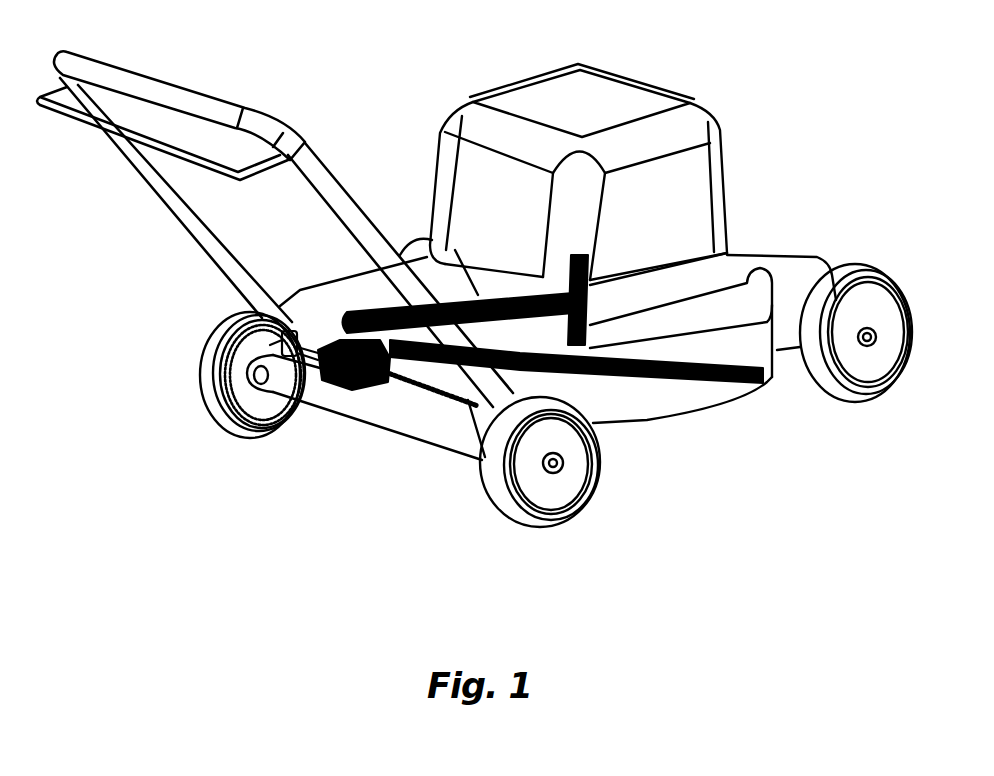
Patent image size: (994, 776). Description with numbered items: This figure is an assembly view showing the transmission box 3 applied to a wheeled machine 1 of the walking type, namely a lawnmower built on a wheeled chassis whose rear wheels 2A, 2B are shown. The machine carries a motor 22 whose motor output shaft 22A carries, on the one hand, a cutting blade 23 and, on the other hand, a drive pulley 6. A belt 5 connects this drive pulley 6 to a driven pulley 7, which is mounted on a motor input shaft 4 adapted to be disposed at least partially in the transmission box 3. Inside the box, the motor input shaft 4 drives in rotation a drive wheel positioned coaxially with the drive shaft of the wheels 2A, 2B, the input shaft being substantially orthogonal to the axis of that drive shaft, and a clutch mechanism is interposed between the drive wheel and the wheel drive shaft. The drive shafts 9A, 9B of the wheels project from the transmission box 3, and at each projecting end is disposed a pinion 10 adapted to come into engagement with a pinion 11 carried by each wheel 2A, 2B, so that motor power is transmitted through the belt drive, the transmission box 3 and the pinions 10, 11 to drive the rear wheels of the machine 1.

The wheeled machine 1 is at (767, 233).
The rear wheel 2A is at (588, 498).
The rear wheel 2B is at (203, 367).
The transmission box 3 is at (367, 397).
The motor input shaft 4 is at (310, 360).
The belt 5 is at (480, 294).
The drive pulley 6 is at (593, 292).
The driven pulley 7 is at (357, 303).
The drive shaft 9A is at (477, 410).
The drive shaft 9B is at (268, 425).
The pinion 10 is at (285, 337).
The pinion 11 is at (255, 430).
The motor 22 is at (652, 103).
The motor output shaft 22A is at (760, 253).
The cutting blade 23 is at (703, 380).